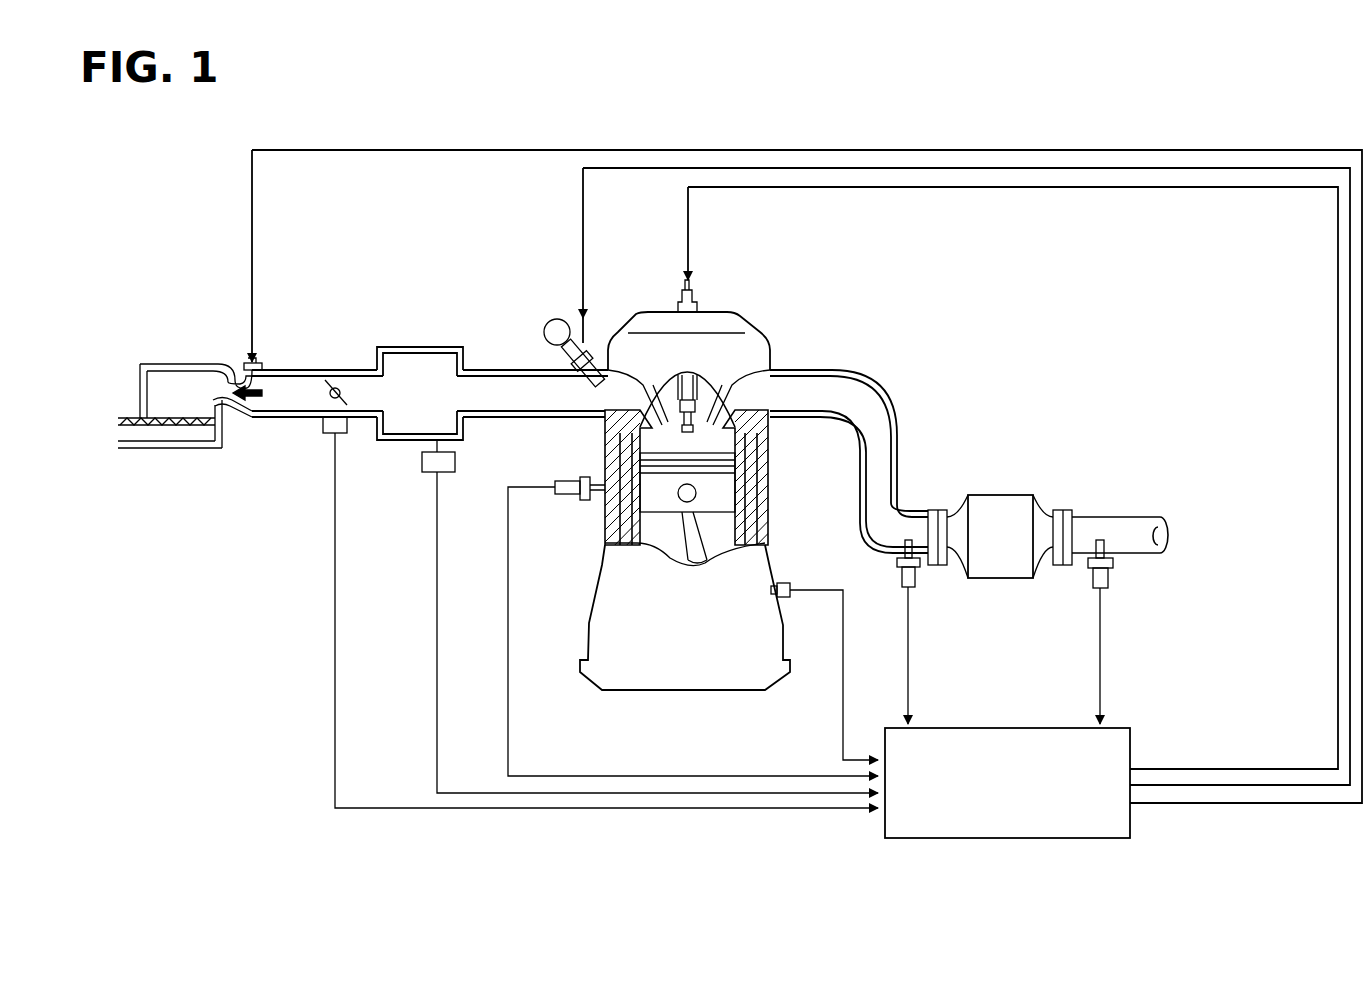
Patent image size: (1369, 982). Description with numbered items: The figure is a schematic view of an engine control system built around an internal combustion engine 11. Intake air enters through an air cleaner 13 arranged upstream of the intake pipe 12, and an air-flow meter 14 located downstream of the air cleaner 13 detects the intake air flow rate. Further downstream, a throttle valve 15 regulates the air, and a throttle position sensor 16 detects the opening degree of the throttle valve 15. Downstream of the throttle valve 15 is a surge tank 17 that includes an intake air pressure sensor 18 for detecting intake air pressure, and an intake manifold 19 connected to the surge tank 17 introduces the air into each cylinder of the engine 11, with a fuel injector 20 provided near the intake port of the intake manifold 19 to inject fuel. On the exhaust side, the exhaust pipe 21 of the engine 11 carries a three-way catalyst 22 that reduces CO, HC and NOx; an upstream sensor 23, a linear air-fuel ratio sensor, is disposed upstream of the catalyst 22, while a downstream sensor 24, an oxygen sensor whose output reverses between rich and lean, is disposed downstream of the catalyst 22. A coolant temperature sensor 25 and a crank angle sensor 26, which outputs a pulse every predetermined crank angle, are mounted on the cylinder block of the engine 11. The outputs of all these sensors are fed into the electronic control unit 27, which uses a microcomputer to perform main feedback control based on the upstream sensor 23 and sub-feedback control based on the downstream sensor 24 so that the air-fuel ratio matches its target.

The internal combustion engine 11 is at (762, 318).
The intake pipe 12 is at (283, 369).
The air cleaner 13 is at (195, 425).
The air-flow meter 14 is at (245, 364).
The throttle valve 15 is at (340, 395).
The throttle position sensor 16 is at (323, 433).
The surge tank 17 is at (415, 347).
The intake air pressure sensor 18 is at (430, 474).
The intake manifold 19 is at (530, 418).
The fuel injector 20 is at (553, 370).
The exhaust pipe 21 is at (835, 370).
The three-way catalyst 22 is at (997, 495).
The upstream sensor 23 is at (912, 575).
The downstream sensor 24 is at (1108, 585).
The coolant temperature sensor 25 is at (585, 500).
The crank angle sensor 26 is at (785, 583).
The electronic control unit 27 is at (978, 840).